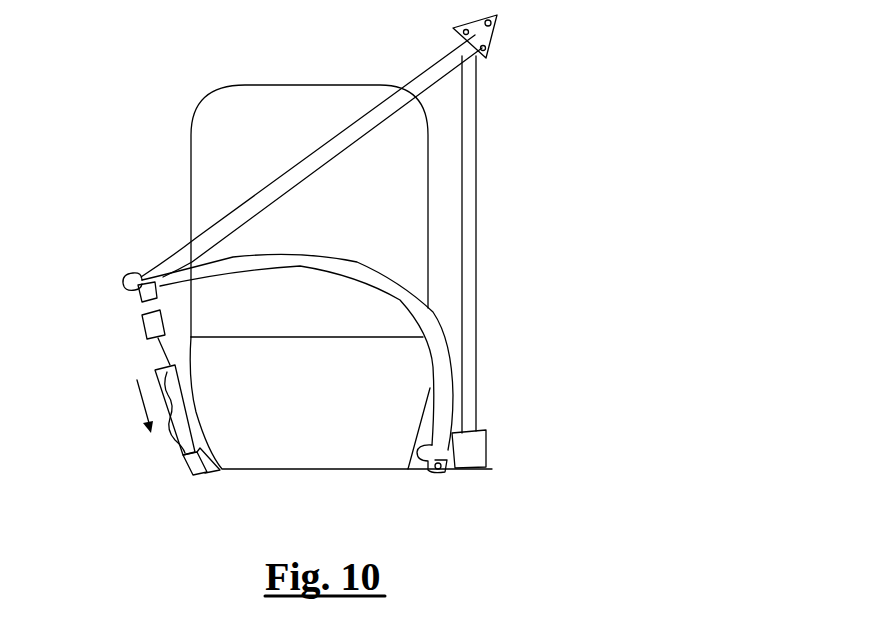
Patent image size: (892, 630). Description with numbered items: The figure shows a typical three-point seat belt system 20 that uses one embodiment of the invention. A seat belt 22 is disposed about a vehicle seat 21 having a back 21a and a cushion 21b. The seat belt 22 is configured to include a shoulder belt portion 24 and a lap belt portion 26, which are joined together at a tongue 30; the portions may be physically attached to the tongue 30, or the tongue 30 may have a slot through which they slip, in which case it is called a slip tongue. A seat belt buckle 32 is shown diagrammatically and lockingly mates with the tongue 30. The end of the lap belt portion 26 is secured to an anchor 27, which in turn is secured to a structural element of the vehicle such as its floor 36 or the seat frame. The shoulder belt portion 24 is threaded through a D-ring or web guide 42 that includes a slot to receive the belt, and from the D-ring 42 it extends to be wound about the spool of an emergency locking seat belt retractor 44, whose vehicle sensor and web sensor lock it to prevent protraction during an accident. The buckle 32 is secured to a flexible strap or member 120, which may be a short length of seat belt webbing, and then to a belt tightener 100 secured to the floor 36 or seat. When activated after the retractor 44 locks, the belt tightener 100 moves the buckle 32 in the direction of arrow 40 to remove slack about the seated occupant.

The seat belt system 20 is at (515, 241).
The vehicle seat 21 is at (310, 263).
The back 21a is at (311, 107).
The cushion 21b is at (290, 433).
The seat belt 22 is at (480, 271).
The shoulder belt portion 24 is at (222, 225).
The lap belt portion 26 is at (343, 267).
The anchor 27 is at (433, 475).
The tongue 30 is at (135, 293).
The seat belt buckle 32 is at (140, 327).
The floor 36 is at (473, 471).
The arrow 40 is at (135, 421).
The D-ring 42 is at (497, 30).
The emergency locking seat belt retractor 44 is at (467, 450).
The belt tightener 100 is at (157, 454).
The flexible strap 120 is at (153, 355).